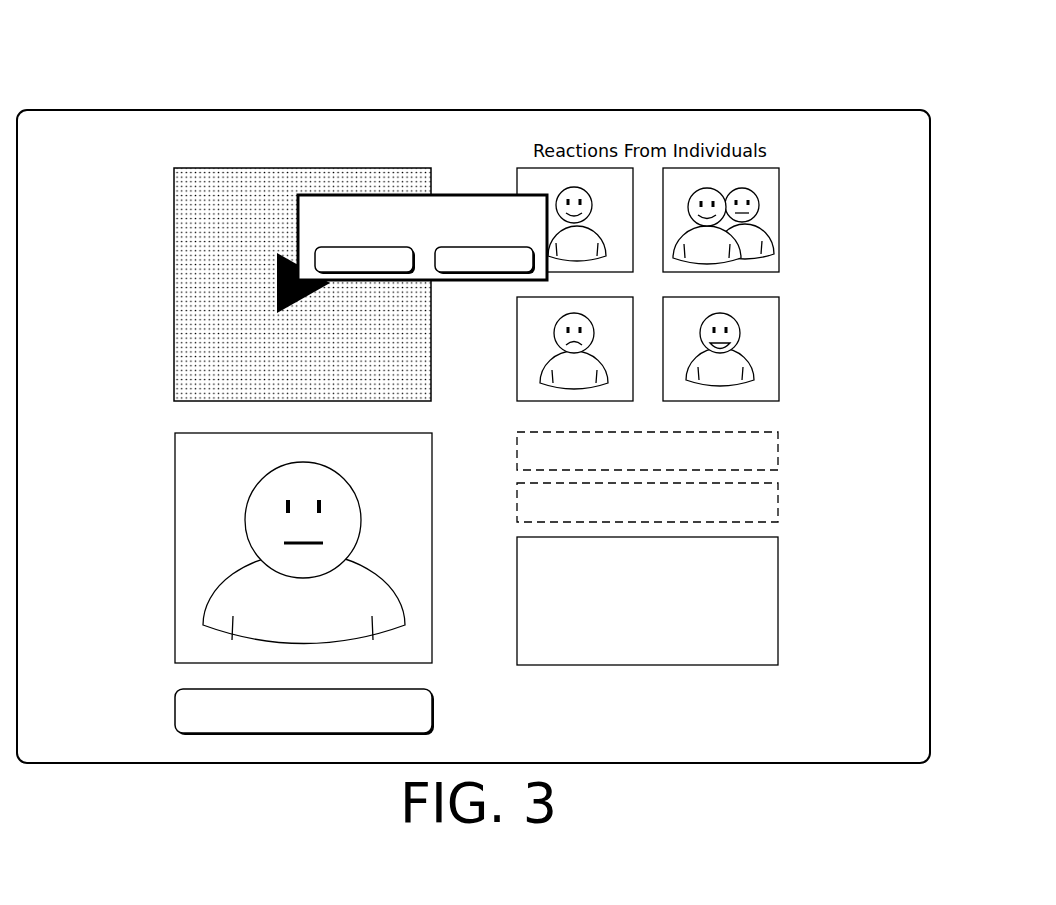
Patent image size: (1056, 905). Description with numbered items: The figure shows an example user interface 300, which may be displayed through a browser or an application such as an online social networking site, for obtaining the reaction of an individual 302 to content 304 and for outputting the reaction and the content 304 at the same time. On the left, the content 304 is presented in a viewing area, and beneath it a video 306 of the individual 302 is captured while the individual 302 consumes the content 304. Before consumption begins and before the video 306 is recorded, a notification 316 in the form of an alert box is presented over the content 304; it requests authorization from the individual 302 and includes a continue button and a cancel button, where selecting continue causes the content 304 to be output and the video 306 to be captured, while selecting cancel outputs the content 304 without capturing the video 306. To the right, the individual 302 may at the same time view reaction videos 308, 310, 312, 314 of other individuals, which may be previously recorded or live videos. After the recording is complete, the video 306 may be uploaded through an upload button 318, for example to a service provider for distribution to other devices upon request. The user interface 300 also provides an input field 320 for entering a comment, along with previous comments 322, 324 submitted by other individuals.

The user interface 300 is at (972, 83).
The individual 302 is at (356, 466).
The content 304 is at (162, 192).
The video of the individual 306 is at (162, 456).
The reaction video 308 is at (509, 177).
The reaction video 310 is at (507, 317).
The reaction video 312 is at (786, 181).
The reaction video 314 is at (786, 311).
The notification 316 is at (423, 195).
The upload button 318 is at (433, 701).
The input field 320 is at (778, 598).
The previous comment 322 is at (778, 452).
The previous comment 324 is at (778, 505).